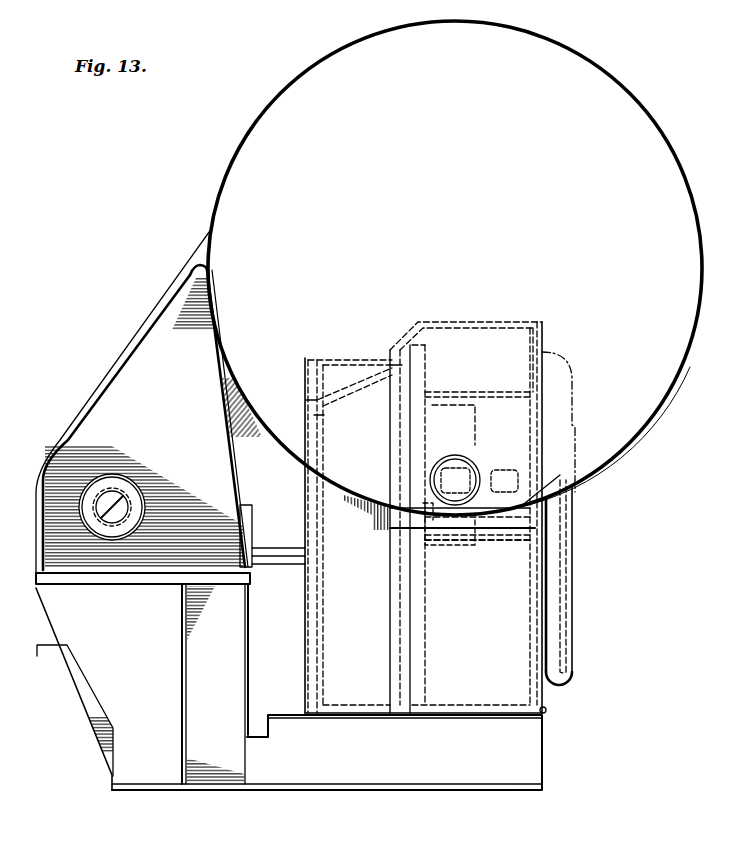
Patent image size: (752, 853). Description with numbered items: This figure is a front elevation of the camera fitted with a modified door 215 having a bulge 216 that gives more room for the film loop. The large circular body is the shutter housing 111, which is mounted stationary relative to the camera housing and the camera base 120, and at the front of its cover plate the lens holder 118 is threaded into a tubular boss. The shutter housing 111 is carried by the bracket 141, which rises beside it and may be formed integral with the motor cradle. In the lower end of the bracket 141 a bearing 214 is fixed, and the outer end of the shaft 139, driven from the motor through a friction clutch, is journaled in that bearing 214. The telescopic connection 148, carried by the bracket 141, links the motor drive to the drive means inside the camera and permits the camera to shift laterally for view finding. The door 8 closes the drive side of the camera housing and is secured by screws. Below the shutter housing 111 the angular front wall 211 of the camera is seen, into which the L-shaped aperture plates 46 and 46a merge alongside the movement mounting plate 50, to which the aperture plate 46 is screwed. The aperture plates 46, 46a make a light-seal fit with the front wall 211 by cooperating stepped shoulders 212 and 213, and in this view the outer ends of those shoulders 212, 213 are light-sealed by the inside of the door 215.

The shutter housing 111 is at (608, 103).
The bracket 141 is at (125, 358).
The bearing 214 is at (107, 475).
The shaft 139 is at (128, 493).
The telescopic connection 148 is at (273, 548).
The door 8 is at (300, 623).
The camera base 120 is at (528, 756).
The front wall 211 is at (423, 517).
The stepped shoulder 212 is at (507, 390).
The lens holder 118 is at (475, 463).
The movement mounting plate 50 is at (420, 600).
The stepped shoulder 213 is at (508, 537).
The aperture plate 46 is at (525, 415).
The aperture plate 46a is at (520, 507).
The bulge 216 is at (562, 525).
The door 215 is at (552, 623).